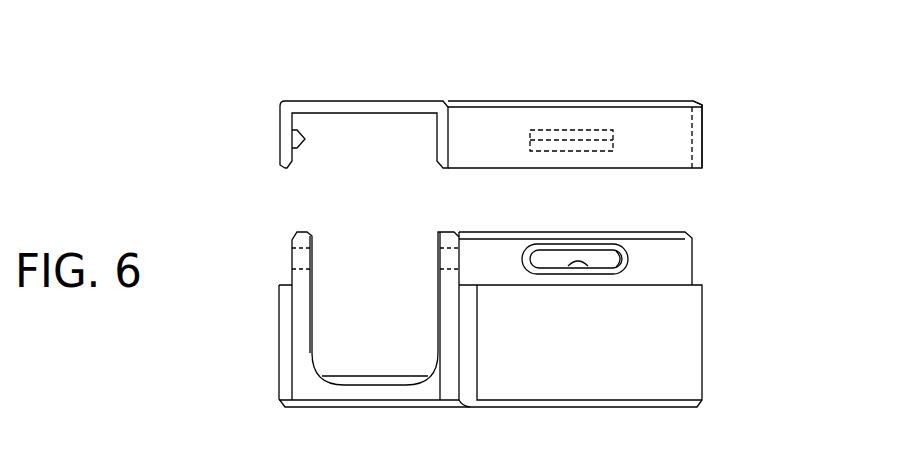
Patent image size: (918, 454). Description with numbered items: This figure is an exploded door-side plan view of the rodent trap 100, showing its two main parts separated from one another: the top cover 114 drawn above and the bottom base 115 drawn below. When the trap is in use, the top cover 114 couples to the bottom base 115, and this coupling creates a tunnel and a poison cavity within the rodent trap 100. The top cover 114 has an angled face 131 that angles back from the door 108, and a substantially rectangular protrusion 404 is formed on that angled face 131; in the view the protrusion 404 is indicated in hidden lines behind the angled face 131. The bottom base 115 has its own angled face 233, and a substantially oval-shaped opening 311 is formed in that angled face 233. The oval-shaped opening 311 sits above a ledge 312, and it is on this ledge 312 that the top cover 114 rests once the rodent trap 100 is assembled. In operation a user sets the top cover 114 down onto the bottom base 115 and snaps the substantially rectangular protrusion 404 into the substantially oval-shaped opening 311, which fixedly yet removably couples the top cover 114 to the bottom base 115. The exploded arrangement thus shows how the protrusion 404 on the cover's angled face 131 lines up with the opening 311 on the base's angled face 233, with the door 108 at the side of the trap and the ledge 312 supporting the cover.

The rodent trap 100 is at (585, 70).
The top cover 114 is at (682, 93).
The substantially rectangular protrusion 404 is at (566, 127).
The angled face 131 is at (673, 152).
The door 108 is at (313, 292).
The ledge 312 is at (654, 285).
The substantially oval-shaped opening 311 is at (580, 266).
The angled face 233 is at (603, 385).
The bottom base 115 is at (710, 285).